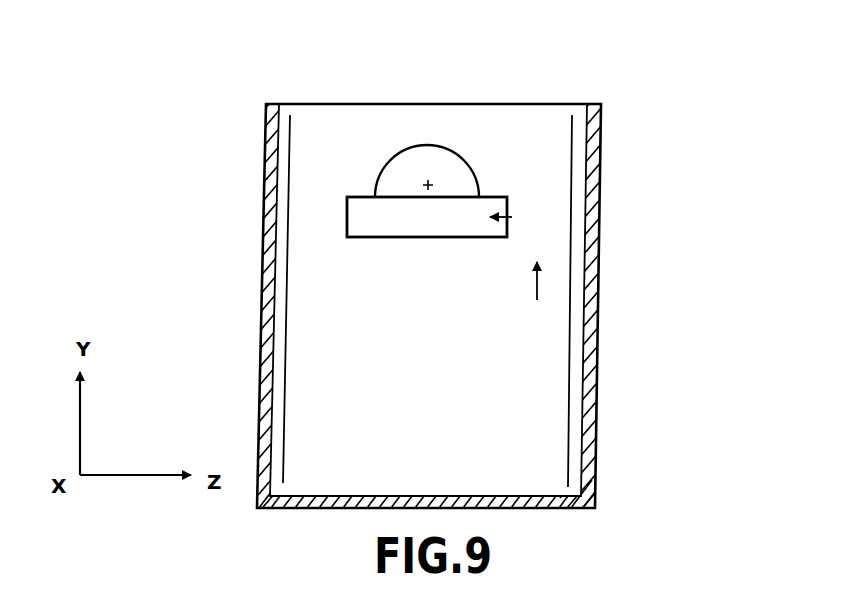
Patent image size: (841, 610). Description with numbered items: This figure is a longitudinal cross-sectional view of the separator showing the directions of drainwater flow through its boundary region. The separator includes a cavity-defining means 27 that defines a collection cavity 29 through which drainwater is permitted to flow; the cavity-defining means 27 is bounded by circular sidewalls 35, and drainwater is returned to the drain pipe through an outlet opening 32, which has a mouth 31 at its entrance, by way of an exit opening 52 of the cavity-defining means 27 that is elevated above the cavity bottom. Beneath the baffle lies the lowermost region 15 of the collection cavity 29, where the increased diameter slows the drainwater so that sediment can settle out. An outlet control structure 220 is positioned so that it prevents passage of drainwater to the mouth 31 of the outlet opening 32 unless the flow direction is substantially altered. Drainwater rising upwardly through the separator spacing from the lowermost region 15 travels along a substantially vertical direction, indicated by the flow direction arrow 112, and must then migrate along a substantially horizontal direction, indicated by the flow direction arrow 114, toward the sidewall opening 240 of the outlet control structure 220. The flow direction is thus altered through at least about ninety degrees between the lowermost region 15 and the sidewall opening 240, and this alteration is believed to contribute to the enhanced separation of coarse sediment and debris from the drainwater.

The lowermost region 15 is at (358, 459).
The cavity-defining means 27 is at (457, 301).
The collection cavity 29 is at (445, 301).
The mouth 31 is at (468, 170).
The outlet opening 32 is at (380, 168).
The circular sidewalls 35 is at (597, 352).
The exit opening 52 is at (440, 145).
The flow direction arrow 112 is at (537, 280).
The flow direction arrow 114 is at (535, 238).
The outlet control structure 220 is at (347, 218).
The sidewall opening 240 is at (510, 214).